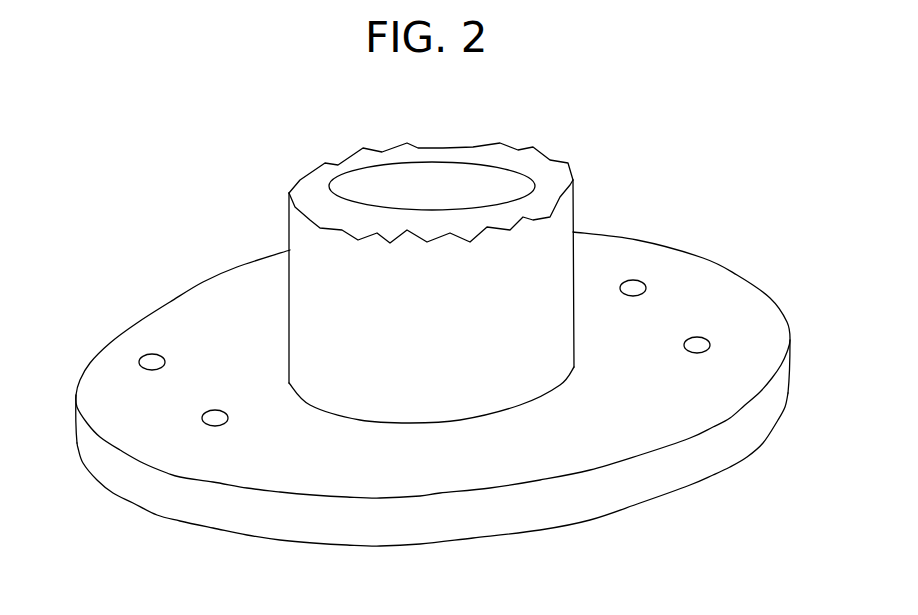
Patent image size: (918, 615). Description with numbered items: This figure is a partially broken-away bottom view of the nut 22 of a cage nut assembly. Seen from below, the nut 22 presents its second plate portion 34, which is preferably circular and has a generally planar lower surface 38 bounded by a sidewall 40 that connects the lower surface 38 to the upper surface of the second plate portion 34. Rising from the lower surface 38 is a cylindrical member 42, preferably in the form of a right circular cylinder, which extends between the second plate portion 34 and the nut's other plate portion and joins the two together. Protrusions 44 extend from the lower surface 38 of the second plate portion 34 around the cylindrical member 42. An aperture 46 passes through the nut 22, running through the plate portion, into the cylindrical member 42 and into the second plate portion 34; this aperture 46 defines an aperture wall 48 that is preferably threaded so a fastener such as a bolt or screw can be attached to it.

The nut 22 is at (737, 117).
The second plate portion 34 is at (712, 450).
The lower surface 38 is at (757, 352).
The sidewall 40 is at (435, 520).
The cylindrical member 42 is at (543, 260).
The protrusions 44 is at (203, 421).
The aperture 46 is at (457, 185).
The aperture wall 48 is at (388, 185).